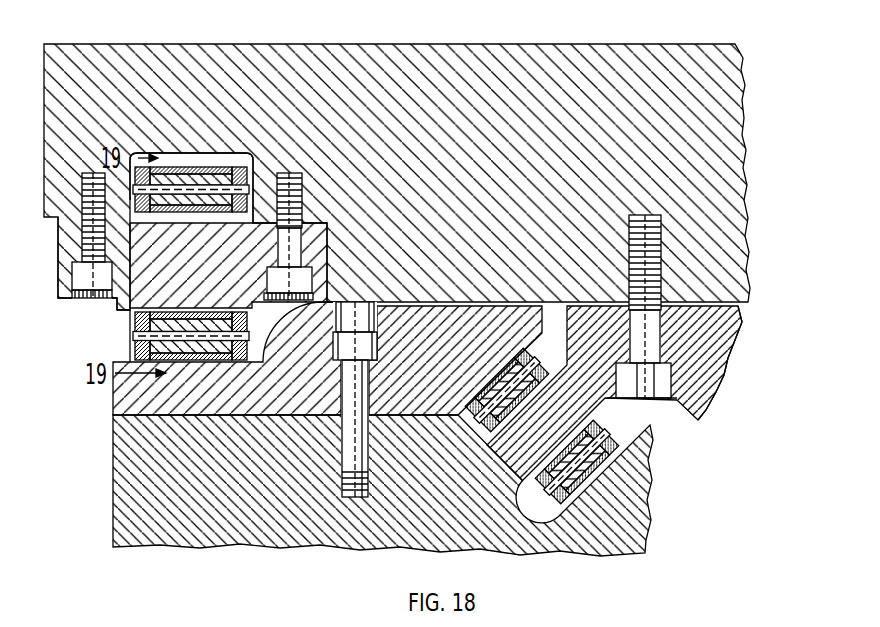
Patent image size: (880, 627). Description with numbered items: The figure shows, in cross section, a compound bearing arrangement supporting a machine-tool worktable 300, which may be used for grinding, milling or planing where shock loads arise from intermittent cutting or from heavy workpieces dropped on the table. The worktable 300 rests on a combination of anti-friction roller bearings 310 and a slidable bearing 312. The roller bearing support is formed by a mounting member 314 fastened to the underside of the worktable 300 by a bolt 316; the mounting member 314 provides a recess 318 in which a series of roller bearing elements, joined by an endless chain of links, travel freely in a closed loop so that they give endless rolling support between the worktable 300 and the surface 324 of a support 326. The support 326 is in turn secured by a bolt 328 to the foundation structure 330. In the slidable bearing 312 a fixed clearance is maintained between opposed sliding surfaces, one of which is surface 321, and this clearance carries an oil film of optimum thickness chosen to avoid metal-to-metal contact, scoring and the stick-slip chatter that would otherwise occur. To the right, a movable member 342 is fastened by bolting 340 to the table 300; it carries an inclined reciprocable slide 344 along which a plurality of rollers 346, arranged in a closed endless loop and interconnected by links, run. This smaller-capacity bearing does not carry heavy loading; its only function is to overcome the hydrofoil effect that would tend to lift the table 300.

The worktable 300 is at (388, 62).
The anti-friction roller bearings 310 is at (190, 366).
The slidable bearing 312 is at (491, 304).
The mounting member 314 is at (63, 286).
The bolt 316 is at (302, 196).
The recess 318 is at (212, 158).
The sliding surface 321 is at (445, 292).
The surface 324 is at (125, 357).
The support 326 is at (115, 408).
The bolt 328 is at (403, 303).
The foundation structure 330 is at (208, 530).
The bolting 340 is at (672, 385).
The movable member 342 is at (712, 333).
The inclined reciprocable slide 344 is at (587, 510).
The rollers 346 is at (587, 490).